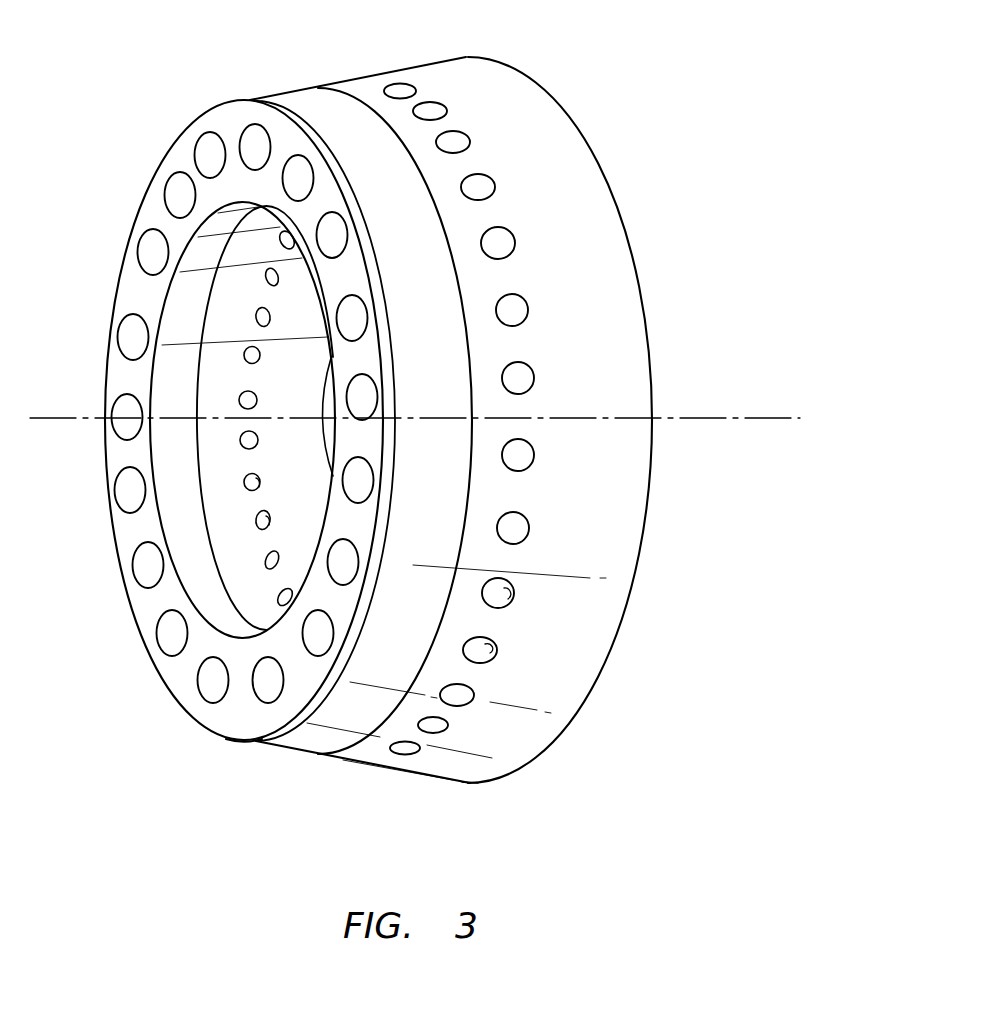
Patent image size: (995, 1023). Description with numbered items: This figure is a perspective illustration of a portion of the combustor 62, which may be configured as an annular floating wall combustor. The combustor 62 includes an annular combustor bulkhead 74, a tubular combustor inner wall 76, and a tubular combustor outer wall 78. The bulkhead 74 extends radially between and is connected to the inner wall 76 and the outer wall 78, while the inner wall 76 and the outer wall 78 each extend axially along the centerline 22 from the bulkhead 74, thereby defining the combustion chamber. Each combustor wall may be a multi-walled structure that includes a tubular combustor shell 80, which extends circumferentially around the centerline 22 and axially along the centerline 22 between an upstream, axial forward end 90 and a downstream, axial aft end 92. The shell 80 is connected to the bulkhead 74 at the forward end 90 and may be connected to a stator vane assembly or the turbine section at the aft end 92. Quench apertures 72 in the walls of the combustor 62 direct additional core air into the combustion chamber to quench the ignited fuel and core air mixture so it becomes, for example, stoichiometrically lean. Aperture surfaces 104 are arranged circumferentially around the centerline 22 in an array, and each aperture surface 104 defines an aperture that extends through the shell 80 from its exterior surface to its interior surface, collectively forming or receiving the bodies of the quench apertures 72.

The combustor 62 is at (661, 95).
The combustor shell 80 is at (178, 330).
The combustor outer wall 78 is at (603, 314).
The centerline 22 is at (765, 412).
The quench apertures 72 is at (241, 438).
The aperture surfaces 104 is at (266, 521).
The combustor inner wall 76 is at (198, 533).
The combustor bulkhead 74 is at (219, 717).
The forward end 90 is at (238, 743).
The aft end 92 is at (488, 782).